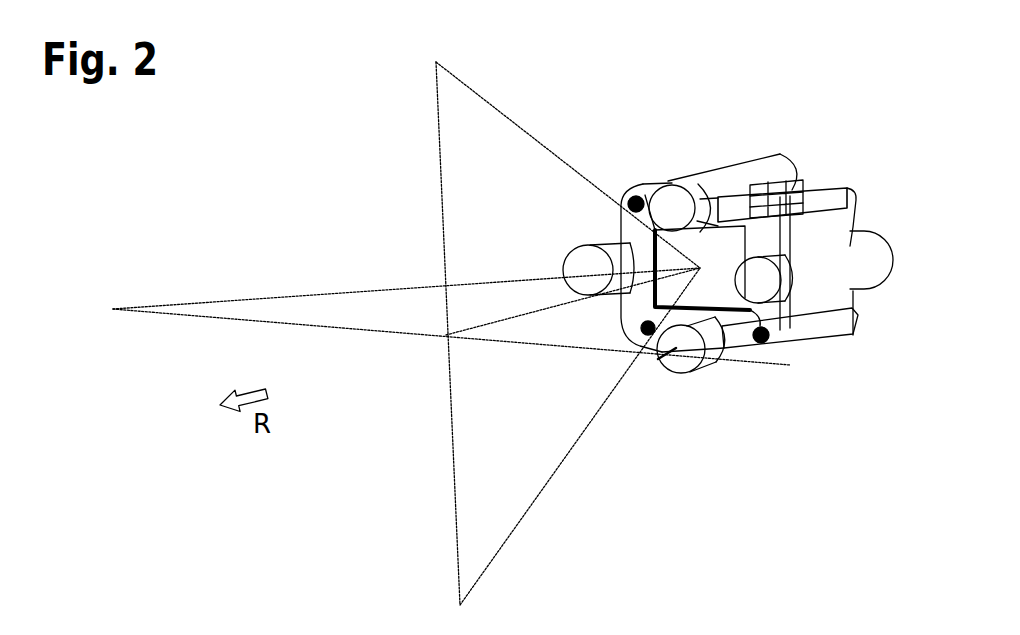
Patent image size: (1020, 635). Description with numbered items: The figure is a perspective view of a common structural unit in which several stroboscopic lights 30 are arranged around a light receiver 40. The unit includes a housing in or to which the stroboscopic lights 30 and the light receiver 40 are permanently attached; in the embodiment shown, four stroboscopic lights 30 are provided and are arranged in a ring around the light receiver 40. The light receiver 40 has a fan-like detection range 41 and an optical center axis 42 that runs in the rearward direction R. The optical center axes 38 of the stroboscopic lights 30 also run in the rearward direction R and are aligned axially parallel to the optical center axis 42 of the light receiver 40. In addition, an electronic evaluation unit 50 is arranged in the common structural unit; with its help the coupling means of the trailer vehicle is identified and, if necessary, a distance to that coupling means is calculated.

The stroboscopic light 30 is at (583, 242).
The optical center axis of the stroboscopic light 38 is at (657, 362).
The light receiver 40 is at (742, 265).
The fan-like detection range 41 is at (300, 297).
The optical center axis of the light receiver 42 is at (477, 325).
The electronic evaluation unit 50 is at (780, 183).